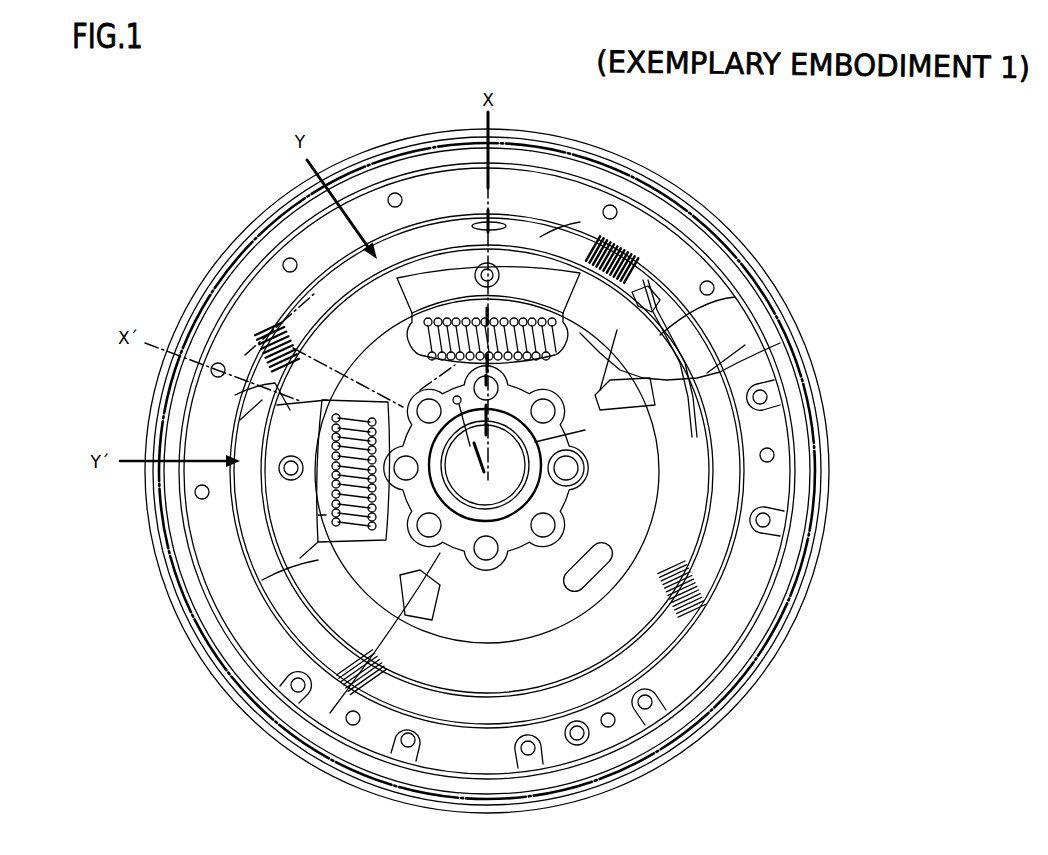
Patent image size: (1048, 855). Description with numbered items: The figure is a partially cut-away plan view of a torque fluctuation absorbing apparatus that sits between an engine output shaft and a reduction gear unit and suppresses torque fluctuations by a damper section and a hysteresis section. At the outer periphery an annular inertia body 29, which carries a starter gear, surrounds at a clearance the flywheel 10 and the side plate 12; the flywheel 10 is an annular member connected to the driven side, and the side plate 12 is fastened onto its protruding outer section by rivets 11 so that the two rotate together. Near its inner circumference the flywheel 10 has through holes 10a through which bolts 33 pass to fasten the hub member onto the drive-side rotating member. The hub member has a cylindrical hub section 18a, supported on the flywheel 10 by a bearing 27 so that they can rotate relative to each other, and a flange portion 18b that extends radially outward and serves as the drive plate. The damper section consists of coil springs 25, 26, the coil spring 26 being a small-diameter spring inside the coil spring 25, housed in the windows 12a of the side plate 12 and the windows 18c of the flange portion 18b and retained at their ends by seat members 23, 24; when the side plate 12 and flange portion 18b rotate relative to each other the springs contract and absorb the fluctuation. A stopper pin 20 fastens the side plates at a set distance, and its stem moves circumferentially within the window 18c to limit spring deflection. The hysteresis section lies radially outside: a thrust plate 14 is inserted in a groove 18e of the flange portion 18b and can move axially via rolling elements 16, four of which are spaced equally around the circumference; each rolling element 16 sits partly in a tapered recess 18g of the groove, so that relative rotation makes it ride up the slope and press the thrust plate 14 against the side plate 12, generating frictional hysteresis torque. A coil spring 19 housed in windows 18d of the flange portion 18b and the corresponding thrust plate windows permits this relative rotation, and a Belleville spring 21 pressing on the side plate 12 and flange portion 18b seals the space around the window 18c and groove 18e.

The flywheel 10 is at (713, 478).
The through hole 10a is at (583, 473).
The rivet 11 is at (762, 397).
The side plate 12 is at (712, 372).
The window 12a is at (707, 373).
The thrust plate 14 is at (660, 297).
The rolling element 16 is at (507, 215).
The hub section 18a is at (513, 547).
The flange portion 18b is at (323, 337).
The window 18c is at (277, 405).
The window 18d is at (640, 297).
The groove 18e is at (540, 237).
The recess 18g is at (477, 215).
The coil spring 19 is at (645, 267).
The stopper pin 20 is at (291, 468).
The Belleville spring 21 is at (262, 580).
The seat member 23 is at (240, 420).
The seat member 24 is at (300, 558).
The coil spring 25 is at (327, 455).
The coil spring 26 is at (325, 520).
The bearing 27 is at (385, 557).
The inertia body 29 is at (745, 692).
The bolt 33 is at (583, 478).